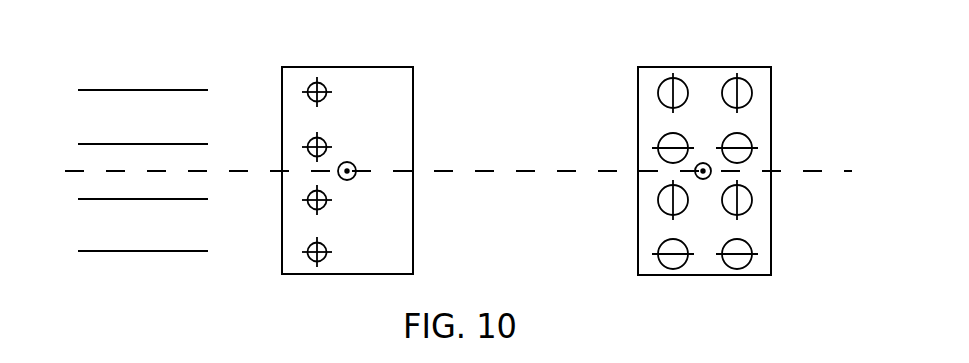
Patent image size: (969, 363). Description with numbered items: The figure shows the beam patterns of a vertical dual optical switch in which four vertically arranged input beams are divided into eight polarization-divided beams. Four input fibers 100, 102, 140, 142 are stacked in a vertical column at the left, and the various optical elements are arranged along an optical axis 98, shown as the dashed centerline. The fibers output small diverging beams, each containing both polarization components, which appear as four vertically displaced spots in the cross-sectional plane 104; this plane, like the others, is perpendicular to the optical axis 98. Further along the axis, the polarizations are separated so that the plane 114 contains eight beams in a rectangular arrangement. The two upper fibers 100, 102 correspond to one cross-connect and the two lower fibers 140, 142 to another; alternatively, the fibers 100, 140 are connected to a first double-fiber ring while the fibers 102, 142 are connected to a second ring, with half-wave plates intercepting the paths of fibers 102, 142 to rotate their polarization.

The optical axis 98 is at (812, 171).
The input fiber 100 is at (147, 90).
The input fiber 102 is at (127, 144).
The cross-sectional plane 104 is at (402, 124).
The plane 114 is at (760, 125).
The input fiber 140 is at (127, 199).
The input fiber 142 is at (147, 251).